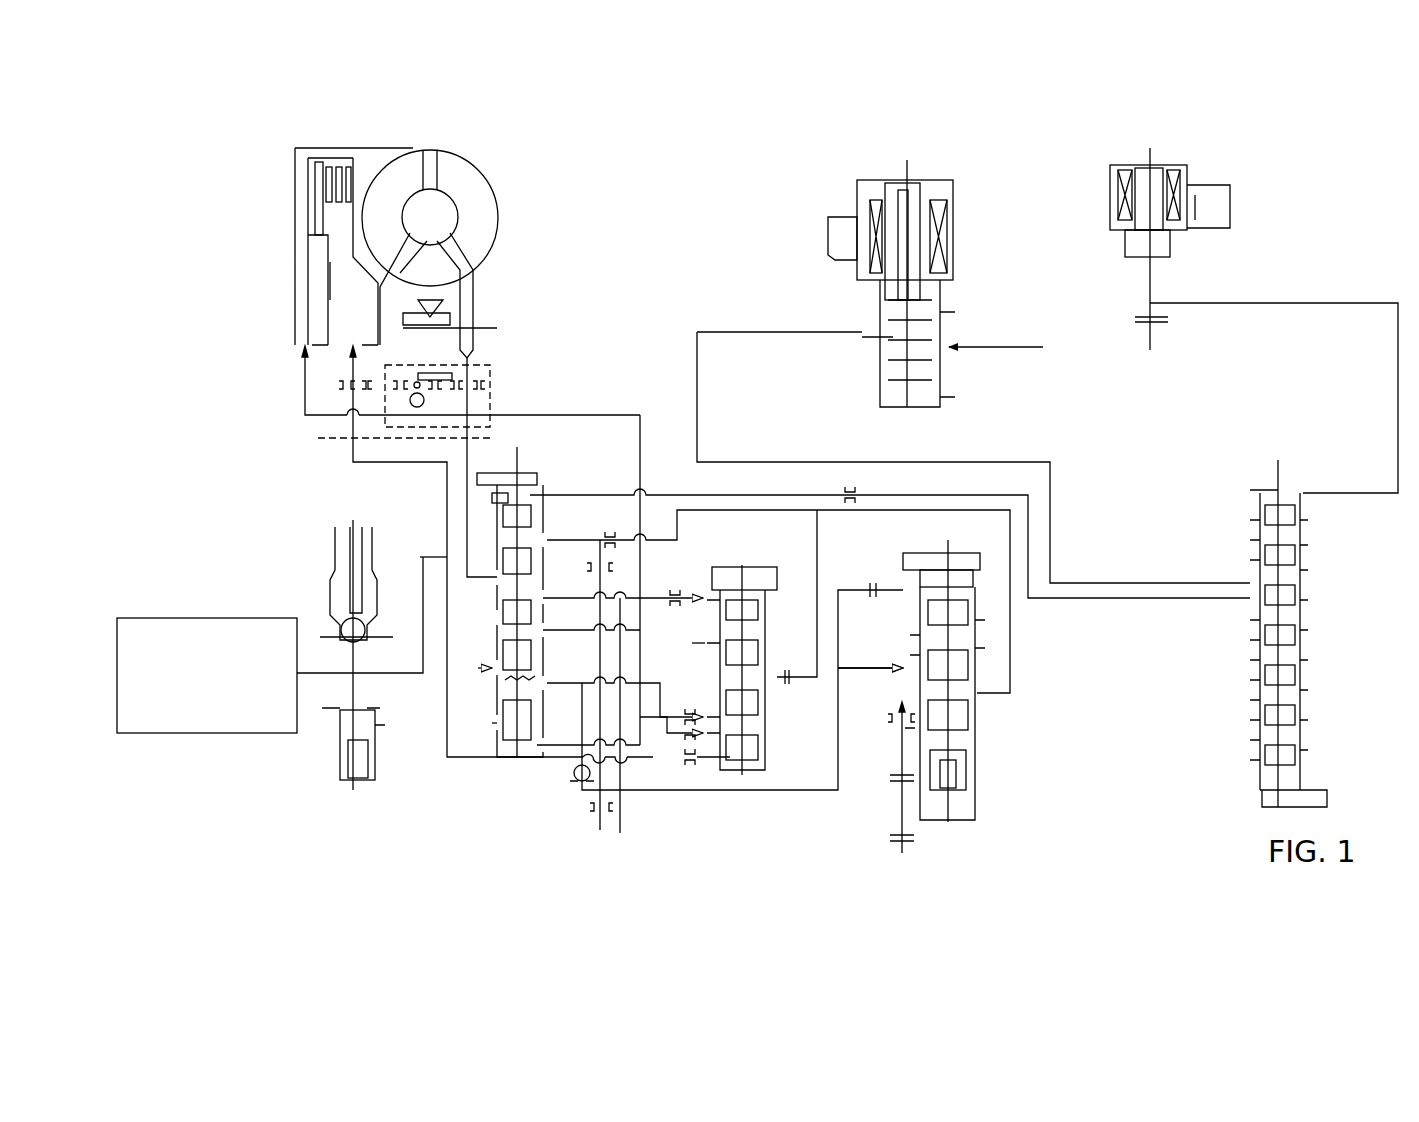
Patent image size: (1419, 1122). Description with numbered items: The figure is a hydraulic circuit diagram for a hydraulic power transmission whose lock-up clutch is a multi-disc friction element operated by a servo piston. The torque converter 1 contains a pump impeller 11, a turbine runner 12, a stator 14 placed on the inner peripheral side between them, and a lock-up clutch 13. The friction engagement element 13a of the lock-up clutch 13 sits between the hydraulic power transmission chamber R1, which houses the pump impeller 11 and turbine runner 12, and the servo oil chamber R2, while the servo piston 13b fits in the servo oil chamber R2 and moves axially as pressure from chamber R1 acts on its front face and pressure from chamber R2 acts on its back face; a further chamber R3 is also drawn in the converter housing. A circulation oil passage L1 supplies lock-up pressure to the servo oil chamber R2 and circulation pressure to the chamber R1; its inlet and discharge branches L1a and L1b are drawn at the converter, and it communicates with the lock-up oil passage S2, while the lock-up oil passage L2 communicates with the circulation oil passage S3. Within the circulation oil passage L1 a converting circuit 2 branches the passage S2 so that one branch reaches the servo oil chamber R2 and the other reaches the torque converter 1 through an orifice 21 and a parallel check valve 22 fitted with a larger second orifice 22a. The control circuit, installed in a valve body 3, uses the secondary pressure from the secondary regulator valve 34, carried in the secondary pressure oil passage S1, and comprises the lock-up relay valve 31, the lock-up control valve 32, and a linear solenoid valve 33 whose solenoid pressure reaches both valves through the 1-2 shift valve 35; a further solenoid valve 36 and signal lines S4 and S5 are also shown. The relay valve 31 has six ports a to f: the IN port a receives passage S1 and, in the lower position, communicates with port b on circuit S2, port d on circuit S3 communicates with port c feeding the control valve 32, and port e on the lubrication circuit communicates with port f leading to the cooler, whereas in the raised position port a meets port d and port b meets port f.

The torque converter 1 is at (374, 229).
The pump impeller 11 is at (480, 197).
The turbine runner 12 is at (410, 162).
The lock-up clutch 13 is at (301, 226).
The friction engagement element 13a is at (343, 160).
The servo piston 13b is at (307, 197).
The stator 14 is at (438, 260).
The hydraulic power transmission chamber R1 is at (443, 222).
The servo oil chamber R2 is at (305, 253).
The third chamber R3 is at (327, 282).
The converting circuit 2 is at (460, 361).
The orifice 21 is at (473, 385).
The check valve 22 is at (417, 383).
The orifice 22a is at (427, 398).
The valve body 3 is at (733, 283).
The lock-up relay valve 31 is at (548, 562).
The lock-up control valve 32 is at (745, 563).
The linear solenoid valve 33 is at (917, 157).
The secondary regulator valve 34 is at (946, 550).
The 1-2 shift valve 35 is at (1278, 470).
The linear solenoid valve 36 is at (1162, 143).
The circulation oil passage L1 is at (527, 423).
The suction passage L1a is at (303, 380).
The discharge passage L1b is at (473, 350).
The lock-up oil passage L2 is at (347, 424).
The secondary pressure oil passage S1 is at (623, 803).
The lock-up oil passage S2 is at (460, 525).
The circulation oil passage S3 is at (440, 470).
The signal line S4 is at (413, 677).
The signal line S5 is at (643, 633).
The IN port a is at (540, 594).
The port b is at (494, 583).
The port c is at (540, 640).
The port d is at (494, 618).
The port e is at (537, 540).
The port f is at (497, 553).